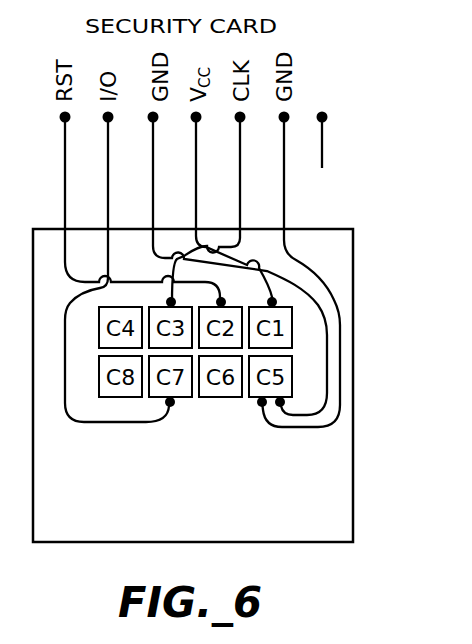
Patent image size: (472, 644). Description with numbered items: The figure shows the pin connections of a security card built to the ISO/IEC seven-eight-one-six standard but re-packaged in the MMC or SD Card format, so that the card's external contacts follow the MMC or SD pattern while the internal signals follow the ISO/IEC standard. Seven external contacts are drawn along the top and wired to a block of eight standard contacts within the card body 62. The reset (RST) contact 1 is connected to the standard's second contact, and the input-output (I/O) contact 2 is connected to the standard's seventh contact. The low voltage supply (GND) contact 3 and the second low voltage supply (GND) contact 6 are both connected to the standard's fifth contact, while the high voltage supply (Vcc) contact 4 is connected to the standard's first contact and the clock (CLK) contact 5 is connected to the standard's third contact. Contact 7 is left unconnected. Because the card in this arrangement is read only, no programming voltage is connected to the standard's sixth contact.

The MMC/SD card contact no. 1 is at (135, 210).
The MMC/SD card contact no. 2 is at (120, 267).
The MMC/SD card contact no. 3 is at (227, 264).
The MMC/SD card contact no. 4 is at (224, 210).
The MMC/SD card contact no. 5 is at (206, 210).
The MMC/SD card contact no. 6 is at (298, 270).
The MMC/SD card contact no. 7 is at (315, 140).
The security card 62 is at (353, 505).